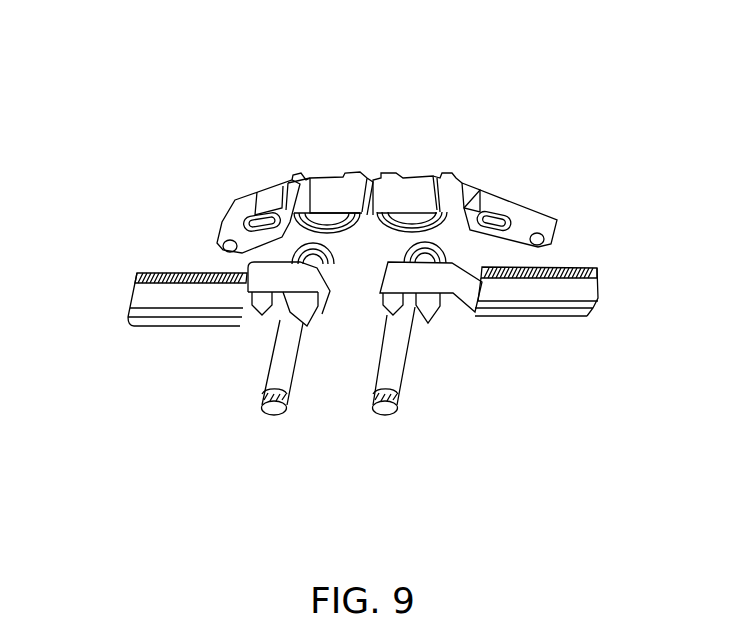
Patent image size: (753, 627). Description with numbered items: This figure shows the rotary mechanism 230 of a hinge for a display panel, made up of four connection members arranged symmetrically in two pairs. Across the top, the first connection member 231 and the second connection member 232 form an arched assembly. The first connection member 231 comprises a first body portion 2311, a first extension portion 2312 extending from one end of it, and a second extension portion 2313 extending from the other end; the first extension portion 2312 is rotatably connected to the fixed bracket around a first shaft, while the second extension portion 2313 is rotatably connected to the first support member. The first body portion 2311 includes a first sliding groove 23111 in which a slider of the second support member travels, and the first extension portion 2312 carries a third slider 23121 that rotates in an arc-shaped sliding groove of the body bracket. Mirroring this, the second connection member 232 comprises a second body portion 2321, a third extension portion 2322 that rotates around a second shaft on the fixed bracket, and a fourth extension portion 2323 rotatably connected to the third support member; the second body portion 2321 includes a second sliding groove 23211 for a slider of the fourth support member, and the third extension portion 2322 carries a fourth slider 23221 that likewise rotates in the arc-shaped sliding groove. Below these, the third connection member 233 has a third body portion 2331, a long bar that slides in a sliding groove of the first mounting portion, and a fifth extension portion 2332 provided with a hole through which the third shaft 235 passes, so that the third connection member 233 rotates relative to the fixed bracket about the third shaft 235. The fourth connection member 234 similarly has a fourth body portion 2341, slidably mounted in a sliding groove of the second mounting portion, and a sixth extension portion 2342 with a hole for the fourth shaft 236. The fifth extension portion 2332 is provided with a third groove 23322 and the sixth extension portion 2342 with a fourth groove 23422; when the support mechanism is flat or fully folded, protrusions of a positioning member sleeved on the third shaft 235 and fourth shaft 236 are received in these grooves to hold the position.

The rotary mechanism 230 is at (158, 33).
The first connection member 231 is at (357, 82).
The first body portion 2311 is at (265, 193).
The first extension portion 2312 is at (336, 195).
The second extension portion 2313 is at (227, 223).
The first sliding groove 23111 is at (242, 226).
The third slider 23121 is at (290, 241).
The second connection member 232 is at (548, 77).
The second body portion 2321 is at (495, 200).
The third extension portion 2322 is at (425, 190).
The fourth extension portion 2323 is at (533, 213).
The second sliding groove 23211 is at (516, 221).
The fourth slider 23221 is at (450, 234).
The third connection member 233 is at (178, 427).
The third body portion 2331 is at (178, 319).
The fifth extension portion 2332 is at (248, 320).
The third groove 23322 is at (270, 324).
The fourth connection member 234 is at (622, 423).
The fourth body portion 2341 is at (535, 315).
The sixth extension portion 2342 is at (475, 320).
The fourth groove 23422 is at (437, 328).
The third shaft 235 is at (273, 417).
The fourth shaft 236 is at (385, 413).